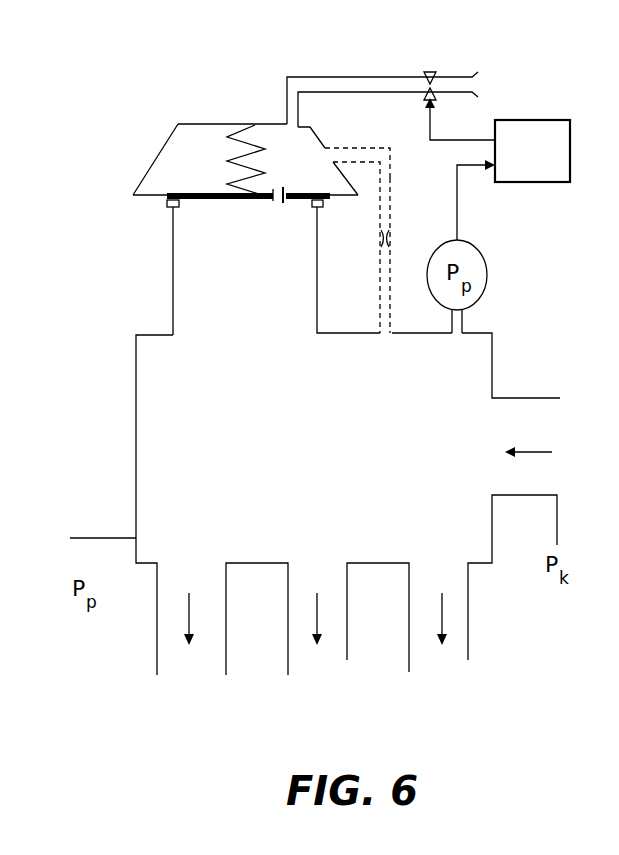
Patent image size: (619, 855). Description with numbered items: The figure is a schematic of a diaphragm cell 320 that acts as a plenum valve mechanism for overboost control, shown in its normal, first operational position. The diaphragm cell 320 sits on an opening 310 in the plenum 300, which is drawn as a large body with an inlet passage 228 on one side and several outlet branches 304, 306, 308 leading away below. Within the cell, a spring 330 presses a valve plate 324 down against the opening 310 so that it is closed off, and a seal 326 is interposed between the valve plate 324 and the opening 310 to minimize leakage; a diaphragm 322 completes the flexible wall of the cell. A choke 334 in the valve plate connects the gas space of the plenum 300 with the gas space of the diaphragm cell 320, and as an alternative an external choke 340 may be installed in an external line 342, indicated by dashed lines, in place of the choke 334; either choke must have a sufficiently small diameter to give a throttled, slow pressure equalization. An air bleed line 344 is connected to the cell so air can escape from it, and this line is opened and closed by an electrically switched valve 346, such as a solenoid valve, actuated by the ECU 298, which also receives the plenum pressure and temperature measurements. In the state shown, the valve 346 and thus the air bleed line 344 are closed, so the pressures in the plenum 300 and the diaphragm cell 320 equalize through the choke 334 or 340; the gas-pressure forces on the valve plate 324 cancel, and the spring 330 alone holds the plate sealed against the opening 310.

The fuel inlet passage 228 is at (518, 397).
The ECU 298 is at (545, 120).
The plenum 300 is at (132, 452).
The first outlet passage 304 is at (157, 668).
The second outlet passage 306 is at (347, 660).
The third outlet passage 308 is at (468, 660).
The opening 310 is at (172, 208).
The diaphragm cell 320 is at (104, 196).
The diaphragm 322 is at (338, 202).
The valve plate 324 is at (187, 192).
The seal 326 is at (178, 200).
The spring 330 is at (232, 160).
The choke 334 is at (283, 205).
The external choke 340 is at (390, 230).
The external line 342 is at (362, 148).
The air bleed line 344 is at (357, 77).
The electrically switched valve 346 is at (428, 70).